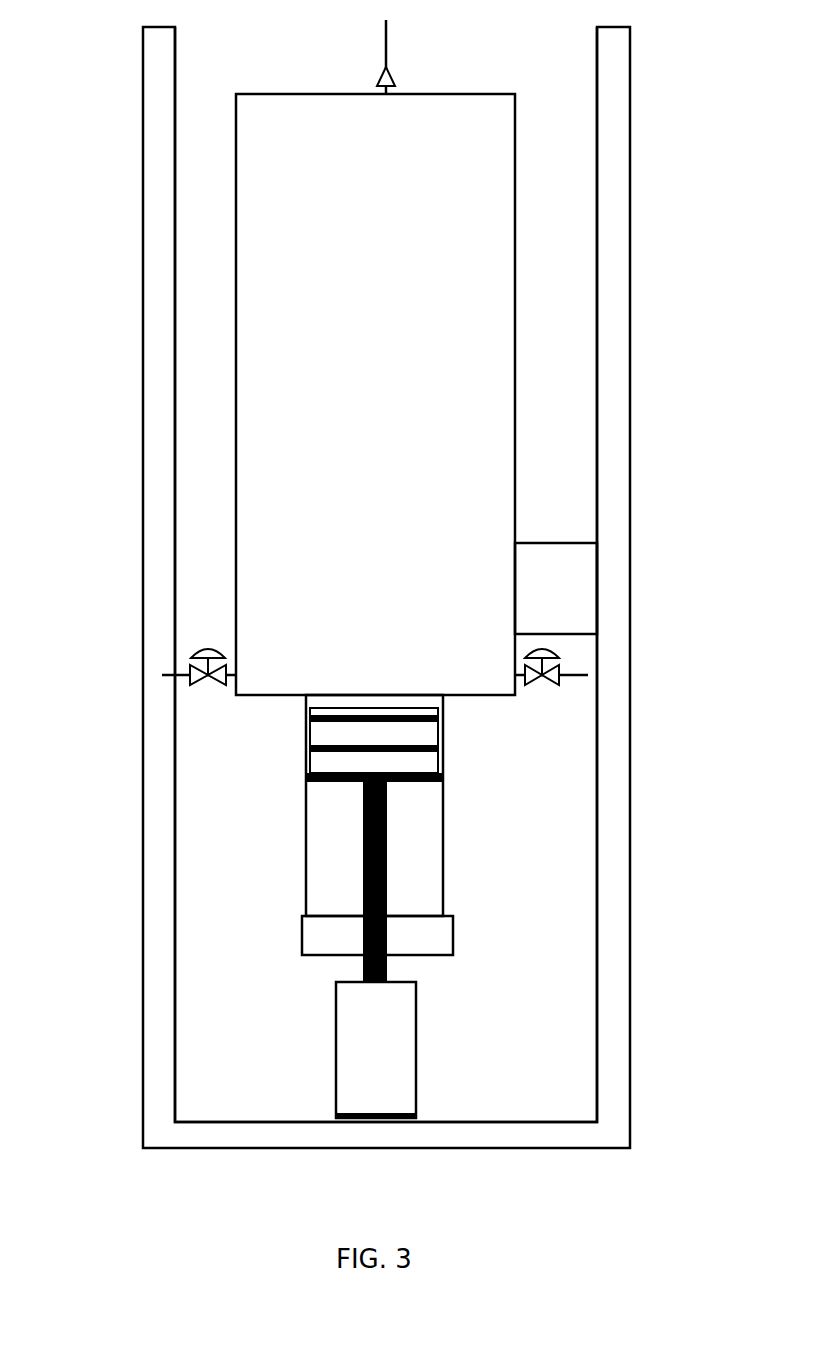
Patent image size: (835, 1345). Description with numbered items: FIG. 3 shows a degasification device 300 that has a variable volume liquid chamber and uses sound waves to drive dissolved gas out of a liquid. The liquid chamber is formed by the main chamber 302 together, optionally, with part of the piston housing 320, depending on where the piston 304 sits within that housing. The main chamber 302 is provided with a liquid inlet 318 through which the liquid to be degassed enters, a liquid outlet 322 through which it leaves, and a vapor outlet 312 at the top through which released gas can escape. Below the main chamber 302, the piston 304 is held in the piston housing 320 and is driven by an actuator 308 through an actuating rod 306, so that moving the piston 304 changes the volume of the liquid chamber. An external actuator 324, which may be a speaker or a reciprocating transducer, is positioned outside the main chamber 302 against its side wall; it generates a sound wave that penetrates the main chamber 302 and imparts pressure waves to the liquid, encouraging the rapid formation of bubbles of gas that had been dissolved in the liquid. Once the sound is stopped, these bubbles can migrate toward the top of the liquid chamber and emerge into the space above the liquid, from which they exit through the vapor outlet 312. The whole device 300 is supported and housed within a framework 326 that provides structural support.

The degasification device 300 is at (338, 587).
The main chamber 302 is at (224, 231).
The piston 304 is at (432, 735).
The actuating rod 306 is at (408, 875).
The actuator 308 is at (324, 1021).
The vapor outlet 312 is at (368, 57).
The liquid inlet 318 is at (562, 695).
The piston housing 320 is at (292, 833).
The liquid outlet 322 is at (182, 690).
The external actuator 324 is at (588, 534).
The framework 326 is at (386, 574).